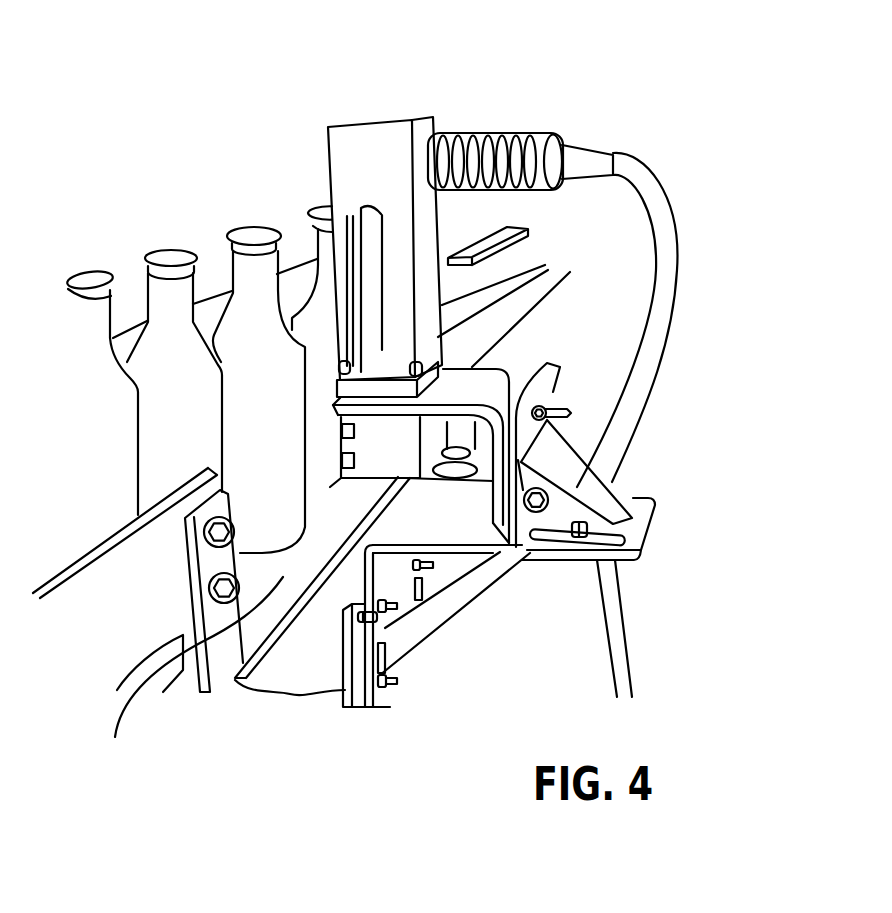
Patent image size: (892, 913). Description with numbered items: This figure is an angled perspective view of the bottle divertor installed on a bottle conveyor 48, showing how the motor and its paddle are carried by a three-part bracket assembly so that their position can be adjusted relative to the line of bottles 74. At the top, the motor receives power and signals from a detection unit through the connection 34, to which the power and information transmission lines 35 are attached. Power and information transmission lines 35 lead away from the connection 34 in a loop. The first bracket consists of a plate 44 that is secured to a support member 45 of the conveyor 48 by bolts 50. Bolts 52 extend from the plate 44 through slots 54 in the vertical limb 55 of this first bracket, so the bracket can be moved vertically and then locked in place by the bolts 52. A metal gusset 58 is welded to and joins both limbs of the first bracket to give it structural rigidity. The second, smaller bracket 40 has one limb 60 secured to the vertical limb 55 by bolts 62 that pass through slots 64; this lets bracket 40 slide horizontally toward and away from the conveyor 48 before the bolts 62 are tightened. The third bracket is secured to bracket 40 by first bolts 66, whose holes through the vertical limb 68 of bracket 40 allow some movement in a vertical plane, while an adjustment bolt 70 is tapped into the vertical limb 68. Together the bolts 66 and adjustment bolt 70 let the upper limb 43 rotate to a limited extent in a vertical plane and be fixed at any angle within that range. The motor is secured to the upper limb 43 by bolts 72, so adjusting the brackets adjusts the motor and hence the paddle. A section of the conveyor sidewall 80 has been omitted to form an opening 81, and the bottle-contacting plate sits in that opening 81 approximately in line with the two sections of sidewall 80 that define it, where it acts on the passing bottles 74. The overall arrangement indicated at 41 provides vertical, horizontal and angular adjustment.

The connection 34 is at (486, 147).
The power and information transmission lines 35 is at (668, 273).
The bracket 40 is at (580, 485).
The container conveyor assembly 41 is at (235, 181).
The upper limb 43 is at (464, 396).
The plate 44 is at (347, 667).
The support member 45 is at (288, 661).
The conveyor 48 is at (210, 708).
The bolts 50 is at (360, 607).
The bolts 52 is at (387, 692).
The slots 54 is at (385, 657).
The vertical limb 55 is at (433, 525).
The metal gusset 58 is at (466, 589).
The limb 60 is at (633, 497).
The bolts 62 is at (640, 533).
The slots 64 is at (627, 542).
The first bolts 66 is at (530, 563).
The vertical limb 68 is at (553, 388).
The adjustment bolt 70 is at (572, 412).
The bolts 72 is at (475, 328).
The bottles 74 is at (238, 369).
The conveyor sidewall 80 is at (463, 307).
The opening 81 is at (193, 627).